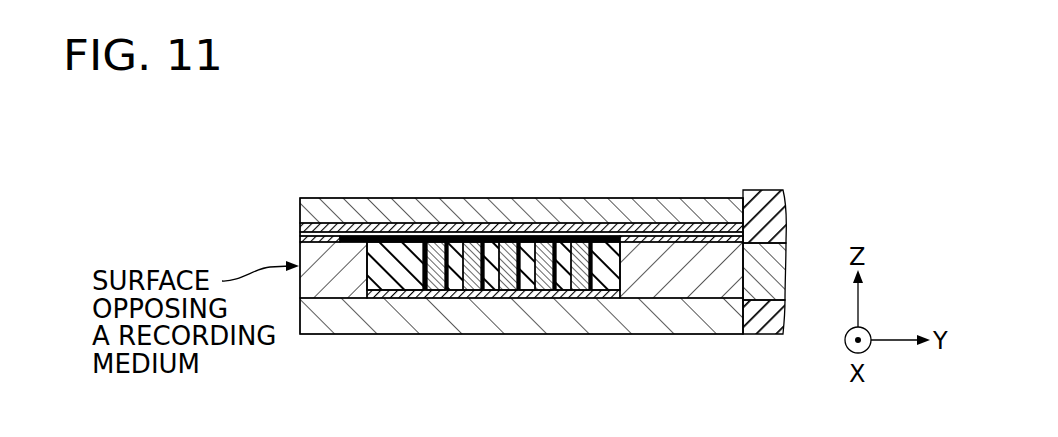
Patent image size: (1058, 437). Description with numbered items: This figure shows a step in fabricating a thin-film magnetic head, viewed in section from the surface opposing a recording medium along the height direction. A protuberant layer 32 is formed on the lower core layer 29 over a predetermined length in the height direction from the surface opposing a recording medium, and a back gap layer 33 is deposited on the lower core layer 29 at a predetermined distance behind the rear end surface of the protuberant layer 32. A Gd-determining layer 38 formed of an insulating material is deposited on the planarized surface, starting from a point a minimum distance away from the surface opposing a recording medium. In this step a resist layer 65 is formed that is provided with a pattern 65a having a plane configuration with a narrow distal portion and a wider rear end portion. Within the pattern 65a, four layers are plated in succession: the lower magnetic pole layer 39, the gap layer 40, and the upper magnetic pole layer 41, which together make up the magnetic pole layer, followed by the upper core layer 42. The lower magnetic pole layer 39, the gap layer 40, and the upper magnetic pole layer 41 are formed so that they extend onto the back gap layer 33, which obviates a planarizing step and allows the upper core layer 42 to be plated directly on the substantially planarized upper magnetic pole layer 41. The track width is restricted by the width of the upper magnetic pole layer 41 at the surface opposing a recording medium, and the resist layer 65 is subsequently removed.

The pattern 65a is at (362, 178).
The upper core layer 42 is at (503, 220).
The gap layer 40 is at (648, 229).
The upper magnetic pole layer 41 is at (575, 233).
The lower magnetic pole layer 39 is at (708, 237).
The Gd-determining layer 38 is at (424, 236).
The protuberant layer 32 is at (337, 295).
The back gap layer 33 is at (681, 292).
The lower core layer 29 is at (481, 318).
The resist layer 65 is at (770, 215).